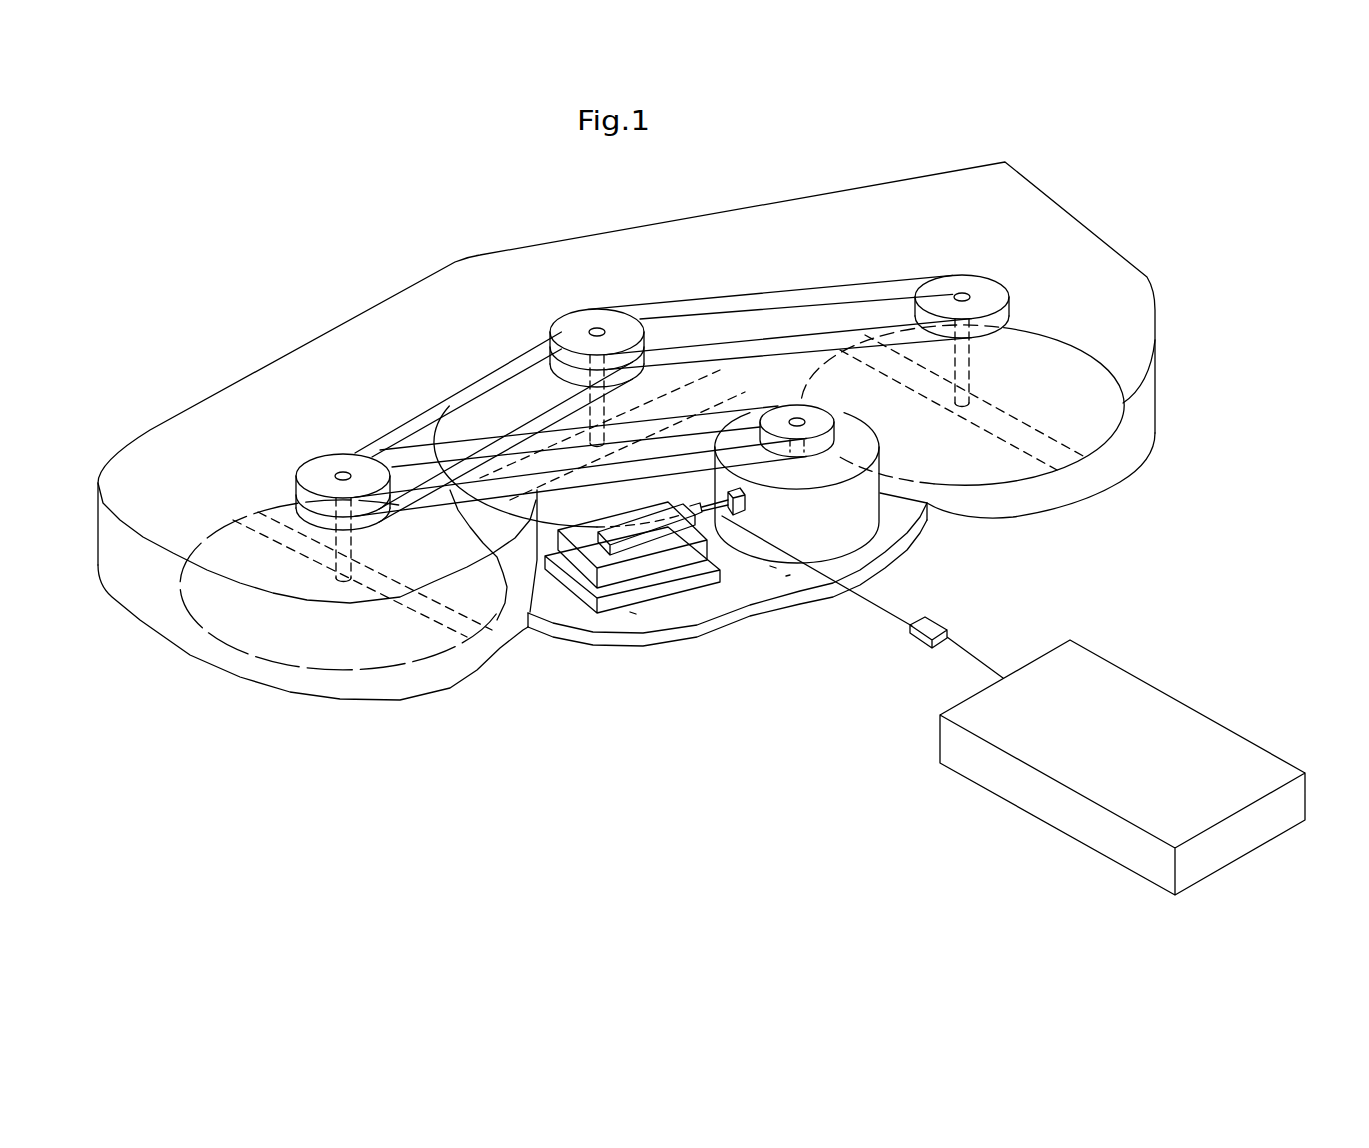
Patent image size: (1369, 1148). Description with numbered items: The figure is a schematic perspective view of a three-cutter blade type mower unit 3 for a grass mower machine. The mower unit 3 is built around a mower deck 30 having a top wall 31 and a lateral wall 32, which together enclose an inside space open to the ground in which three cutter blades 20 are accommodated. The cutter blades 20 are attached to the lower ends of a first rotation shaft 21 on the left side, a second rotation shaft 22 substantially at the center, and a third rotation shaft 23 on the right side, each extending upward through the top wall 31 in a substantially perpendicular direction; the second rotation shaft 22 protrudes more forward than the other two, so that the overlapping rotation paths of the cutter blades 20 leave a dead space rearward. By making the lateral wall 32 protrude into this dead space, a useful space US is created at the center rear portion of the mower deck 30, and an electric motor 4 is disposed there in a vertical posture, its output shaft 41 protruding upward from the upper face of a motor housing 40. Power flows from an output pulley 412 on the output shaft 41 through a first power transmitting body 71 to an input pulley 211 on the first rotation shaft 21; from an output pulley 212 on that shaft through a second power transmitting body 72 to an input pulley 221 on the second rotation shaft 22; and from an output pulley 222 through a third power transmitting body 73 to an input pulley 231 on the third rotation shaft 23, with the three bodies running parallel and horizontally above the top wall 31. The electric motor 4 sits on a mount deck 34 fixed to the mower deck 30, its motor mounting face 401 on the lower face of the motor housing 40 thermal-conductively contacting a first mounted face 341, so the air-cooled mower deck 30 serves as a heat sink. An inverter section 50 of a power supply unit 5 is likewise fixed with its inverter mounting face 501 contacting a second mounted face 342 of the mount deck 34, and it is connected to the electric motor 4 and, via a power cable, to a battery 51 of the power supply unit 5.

The mower unit 3 is at (298, 277).
The mower deck 30 is at (768, 202).
The top wall 31 is at (1062, 233).
The lateral wall 32 is at (1147, 412).
The mount deck 34 is at (662, 640).
The first mounted face 341 is at (788, 567).
The second mounted face 342 is at (633, 610).
The motor mounting face 401 is at (773, 563).
The cutter blade 20 is at (430, 640).
The first rotation shaft 21 is at (340, 468).
The input pulley 211 is at (302, 470).
The output pulley 212 is at (317, 527).
The second rotation shaft 22 is at (596, 328).
The input pulley 221 is at (510, 374).
The output pulley 222 is at (572, 322).
The third rotation shaft 23 is at (962, 292).
The input pulley 231 is at (942, 285).
The first power transmitting body 71 is at (457, 503).
The second power transmitting body 72 is at (423, 417).
The third power transmitting body 73 is at (787, 297).
The useful space US is at (749, 665).
The electric motor 4 is at (887, 518).
The motor housing 40 is at (850, 548).
The output shaft 41 is at (797, 416).
The output pulley 412 is at (822, 420).
The power supply unit 5 is at (577, 583).
The inverter section 50 is at (657, 573).
The inverter mounting face 501 is at (587, 613).
The battery 51 is at (1113, 677).